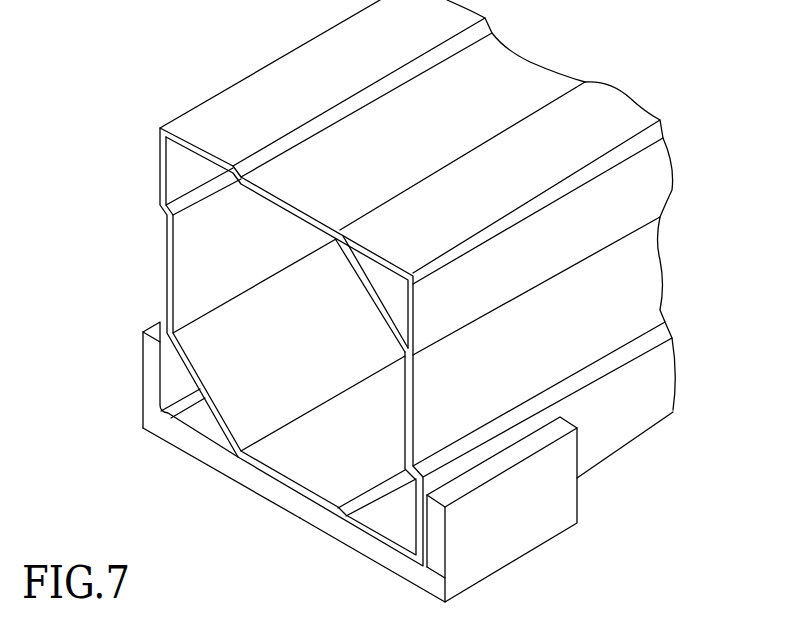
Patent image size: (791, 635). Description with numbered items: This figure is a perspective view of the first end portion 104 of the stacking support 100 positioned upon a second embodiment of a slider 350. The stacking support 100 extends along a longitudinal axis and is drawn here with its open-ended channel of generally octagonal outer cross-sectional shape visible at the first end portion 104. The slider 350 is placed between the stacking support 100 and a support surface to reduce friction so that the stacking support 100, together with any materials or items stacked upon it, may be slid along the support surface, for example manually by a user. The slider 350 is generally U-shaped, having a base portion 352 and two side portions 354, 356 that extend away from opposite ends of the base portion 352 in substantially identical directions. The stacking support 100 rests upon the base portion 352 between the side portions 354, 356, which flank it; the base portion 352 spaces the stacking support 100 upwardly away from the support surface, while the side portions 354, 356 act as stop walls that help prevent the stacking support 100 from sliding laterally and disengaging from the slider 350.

The stacking support 100 is at (245, 78).
The first end portion 104 is at (170, 270).
The slider 350 is at (338, 542).
The base portion 352 is at (276, 489).
The side portion 354 is at (532, 517).
The side portion 356 is at (145, 383).